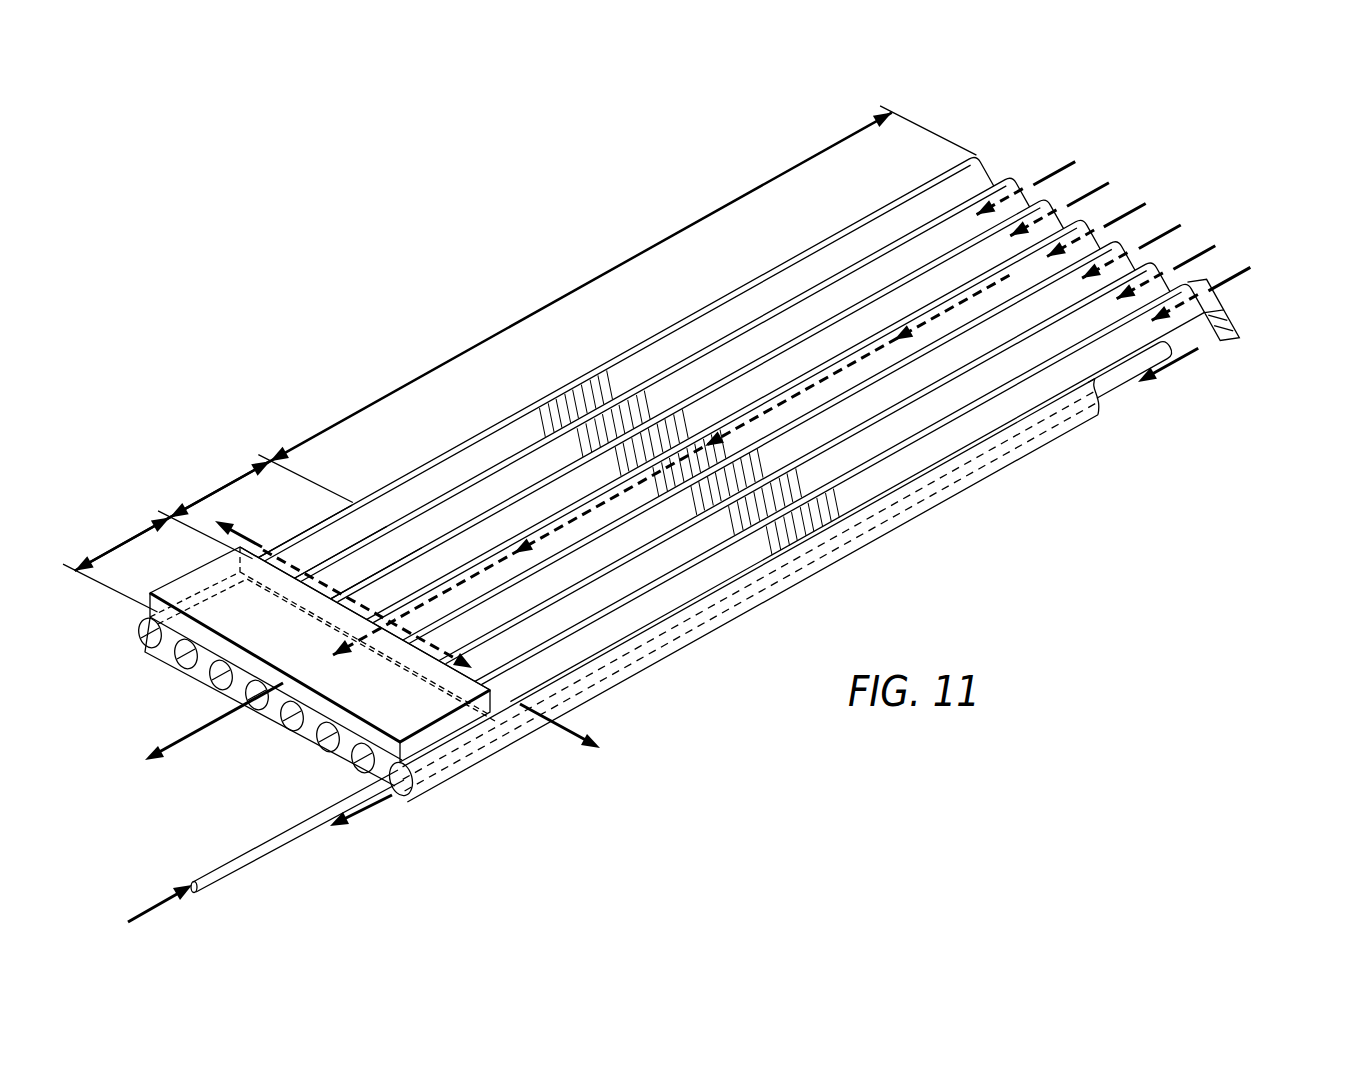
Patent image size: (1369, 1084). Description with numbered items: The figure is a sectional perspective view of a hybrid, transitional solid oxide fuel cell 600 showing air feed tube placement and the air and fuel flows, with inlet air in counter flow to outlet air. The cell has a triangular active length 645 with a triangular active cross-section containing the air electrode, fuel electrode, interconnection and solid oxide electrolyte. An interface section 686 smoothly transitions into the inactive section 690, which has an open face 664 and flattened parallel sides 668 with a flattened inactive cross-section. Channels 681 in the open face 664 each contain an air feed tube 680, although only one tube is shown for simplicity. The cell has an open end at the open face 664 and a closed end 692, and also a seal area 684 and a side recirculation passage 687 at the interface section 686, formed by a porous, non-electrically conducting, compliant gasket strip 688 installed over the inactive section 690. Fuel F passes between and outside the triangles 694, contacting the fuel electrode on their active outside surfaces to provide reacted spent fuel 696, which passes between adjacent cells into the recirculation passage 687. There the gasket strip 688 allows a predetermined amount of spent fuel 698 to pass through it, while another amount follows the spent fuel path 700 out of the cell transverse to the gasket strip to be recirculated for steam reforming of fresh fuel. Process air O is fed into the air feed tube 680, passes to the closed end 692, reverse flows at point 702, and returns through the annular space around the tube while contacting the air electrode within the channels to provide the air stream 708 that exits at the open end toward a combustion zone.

The solid oxide fuel cell 600 is at (763, 419).
The triangular active length 645 is at (527, 318).
The open face 664 is at (168, 652).
The flattened parallel sides 668 is at (213, 598).
The air feed tube 680 is at (270, 838).
The channels 681 is at (223, 682).
The seal area 684 is at (365, 708).
The interface section 686 is at (222, 490).
The side recirculation passage 687 is at (322, 578).
The gasket strip 688 is at (432, 757).
The inactive section 690 is at (140, 528).
The closed end 692 is at (1237, 327).
The triangles 694 is at (1232, 302).
The reacted spent fuel 696 is at (757, 420).
The spent fuel 698 is at (195, 728).
The spent fuel path 700 is at (282, 504).
The reverse flow point 702 is at (1186, 346).
The air stream 708 is at (380, 800).